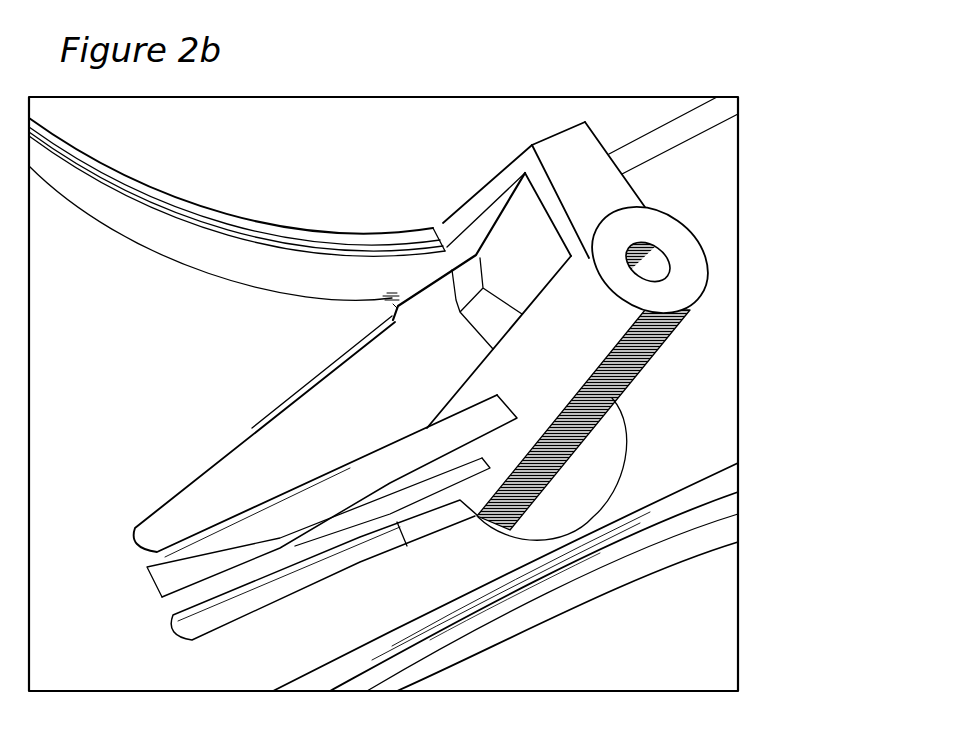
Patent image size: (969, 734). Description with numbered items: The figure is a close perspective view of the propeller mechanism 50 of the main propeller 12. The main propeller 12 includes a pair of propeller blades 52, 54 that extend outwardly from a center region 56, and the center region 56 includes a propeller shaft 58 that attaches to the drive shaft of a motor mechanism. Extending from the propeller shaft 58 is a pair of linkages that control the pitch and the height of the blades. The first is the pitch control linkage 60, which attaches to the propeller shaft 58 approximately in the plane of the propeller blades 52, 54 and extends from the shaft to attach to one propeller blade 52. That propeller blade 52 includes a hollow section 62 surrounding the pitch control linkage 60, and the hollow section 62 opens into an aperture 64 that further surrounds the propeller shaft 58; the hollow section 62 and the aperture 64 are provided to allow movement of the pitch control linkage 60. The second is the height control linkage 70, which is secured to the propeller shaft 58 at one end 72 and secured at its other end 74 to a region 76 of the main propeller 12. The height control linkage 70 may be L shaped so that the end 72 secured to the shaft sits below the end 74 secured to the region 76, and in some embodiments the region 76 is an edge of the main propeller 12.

The main propeller 12 is at (195, 320).
The propeller mechanism 50 is at (713, 285).
The propeller blade 52 is at (87, 506).
The propeller blade 54 is at (711, 205).
The center region 56 is at (478, 540).
The propeller shaft 58 is at (652, 344).
The pitch control linkage 60 is at (350, 480).
The hollow section 62 is at (219, 488).
The aperture 64 is at (567, 492).
The height control linkage 70 is at (583, 172).
The end 72 is at (620, 173).
The end 74 is at (447, 222).
The region 76 is at (403, 238).